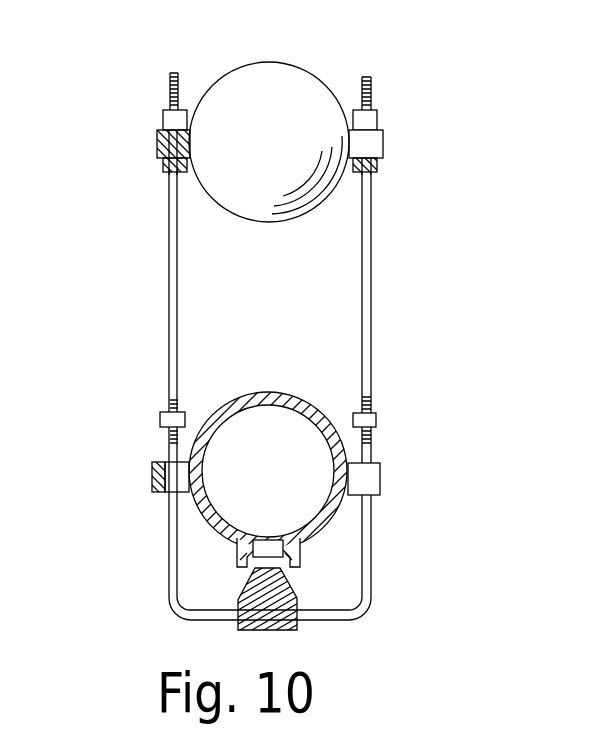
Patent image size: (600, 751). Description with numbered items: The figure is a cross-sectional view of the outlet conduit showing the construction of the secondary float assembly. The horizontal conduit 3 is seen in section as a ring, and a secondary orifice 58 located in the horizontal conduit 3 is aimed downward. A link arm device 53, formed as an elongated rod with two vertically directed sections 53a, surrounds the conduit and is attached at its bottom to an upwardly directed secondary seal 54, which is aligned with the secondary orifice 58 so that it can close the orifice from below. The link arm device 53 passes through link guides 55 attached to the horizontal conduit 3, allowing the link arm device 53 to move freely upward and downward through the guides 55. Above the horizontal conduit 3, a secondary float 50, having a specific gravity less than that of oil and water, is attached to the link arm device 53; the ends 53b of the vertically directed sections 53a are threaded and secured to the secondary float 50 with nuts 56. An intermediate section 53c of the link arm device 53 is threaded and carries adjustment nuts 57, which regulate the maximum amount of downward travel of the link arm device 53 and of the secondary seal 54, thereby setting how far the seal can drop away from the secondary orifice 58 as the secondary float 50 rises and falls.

The horizontal conduit 3 is at (274, 403).
The secondary float 50 is at (281, 86).
The link arm device 53 is at (407, 361).
The vertically directed sections 53a is at (170, 312).
The threaded ends 53b is at (172, 100).
The intermediate section 53c is at (171, 409).
The secondary seal 54 is at (272, 595).
The link guides 55 is at (152, 478).
The nuts 56 is at (172, 114).
The adjustment nuts 57 is at (165, 428).
The secondary orifice 58 is at (262, 546).